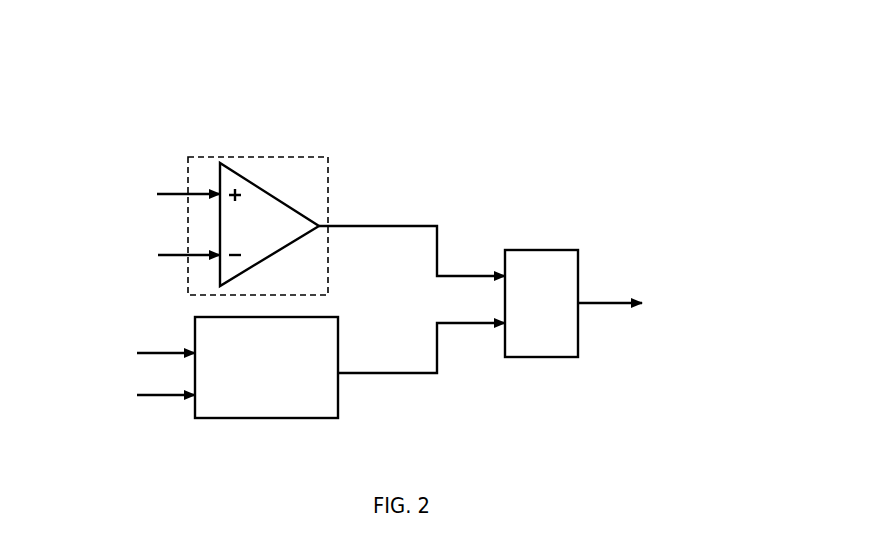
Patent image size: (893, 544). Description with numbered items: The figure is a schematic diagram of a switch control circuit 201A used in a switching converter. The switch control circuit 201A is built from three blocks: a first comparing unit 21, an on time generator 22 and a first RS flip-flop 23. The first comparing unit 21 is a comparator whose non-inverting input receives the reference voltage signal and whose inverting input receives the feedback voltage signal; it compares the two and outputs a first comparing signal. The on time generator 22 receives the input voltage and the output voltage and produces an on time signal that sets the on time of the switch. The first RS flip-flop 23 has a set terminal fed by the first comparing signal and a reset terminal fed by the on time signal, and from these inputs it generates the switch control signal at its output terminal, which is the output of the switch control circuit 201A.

The switch control circuit 201A is at (490, 90).
The first comparing unit 21 is at (328, 167).
The on time generator 22 is at (338, 335).
The first RS flip-flop 23 is at (578, 250).